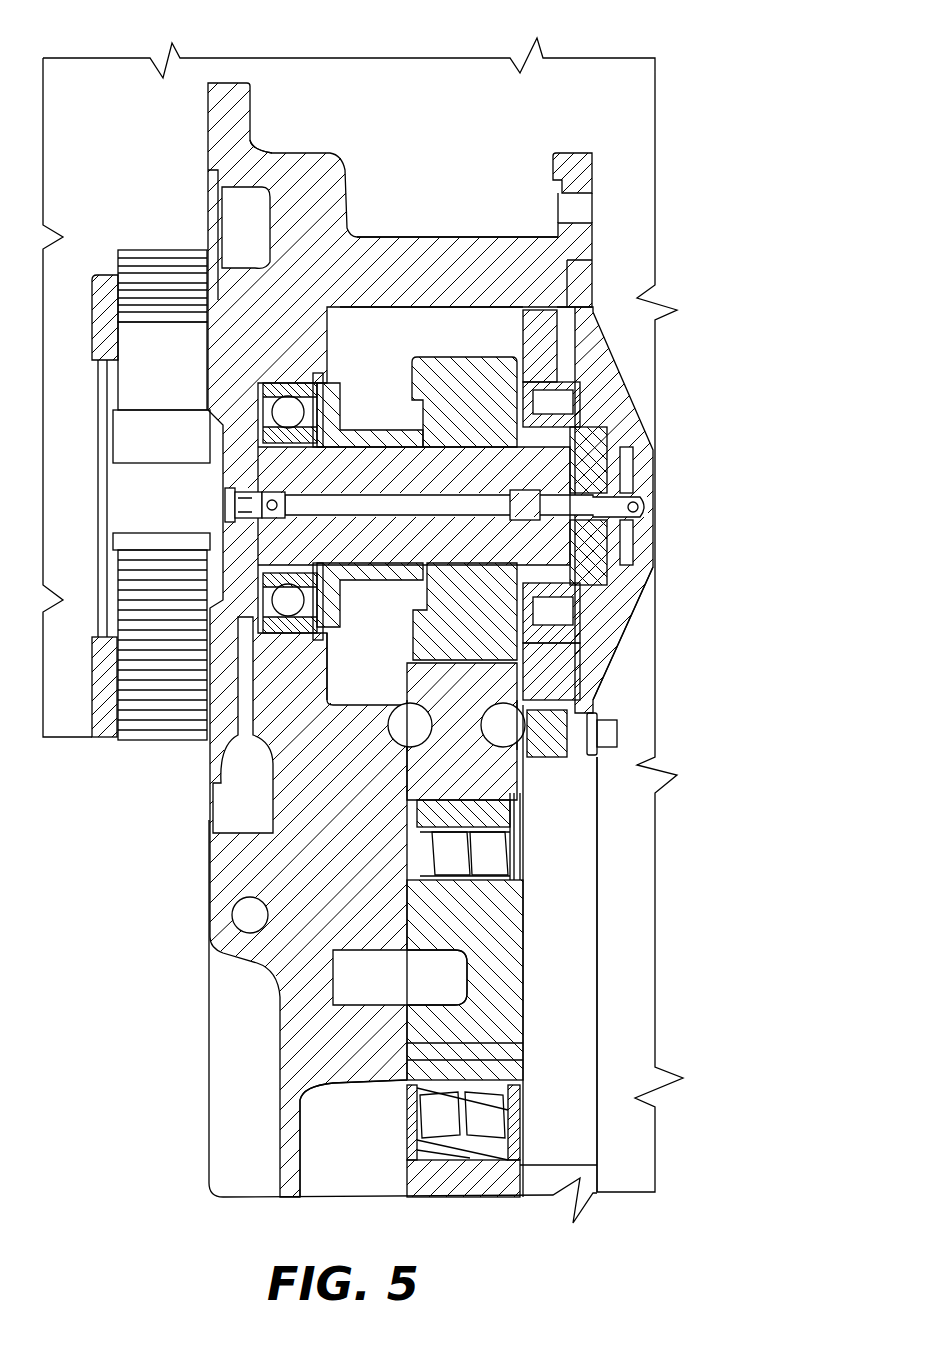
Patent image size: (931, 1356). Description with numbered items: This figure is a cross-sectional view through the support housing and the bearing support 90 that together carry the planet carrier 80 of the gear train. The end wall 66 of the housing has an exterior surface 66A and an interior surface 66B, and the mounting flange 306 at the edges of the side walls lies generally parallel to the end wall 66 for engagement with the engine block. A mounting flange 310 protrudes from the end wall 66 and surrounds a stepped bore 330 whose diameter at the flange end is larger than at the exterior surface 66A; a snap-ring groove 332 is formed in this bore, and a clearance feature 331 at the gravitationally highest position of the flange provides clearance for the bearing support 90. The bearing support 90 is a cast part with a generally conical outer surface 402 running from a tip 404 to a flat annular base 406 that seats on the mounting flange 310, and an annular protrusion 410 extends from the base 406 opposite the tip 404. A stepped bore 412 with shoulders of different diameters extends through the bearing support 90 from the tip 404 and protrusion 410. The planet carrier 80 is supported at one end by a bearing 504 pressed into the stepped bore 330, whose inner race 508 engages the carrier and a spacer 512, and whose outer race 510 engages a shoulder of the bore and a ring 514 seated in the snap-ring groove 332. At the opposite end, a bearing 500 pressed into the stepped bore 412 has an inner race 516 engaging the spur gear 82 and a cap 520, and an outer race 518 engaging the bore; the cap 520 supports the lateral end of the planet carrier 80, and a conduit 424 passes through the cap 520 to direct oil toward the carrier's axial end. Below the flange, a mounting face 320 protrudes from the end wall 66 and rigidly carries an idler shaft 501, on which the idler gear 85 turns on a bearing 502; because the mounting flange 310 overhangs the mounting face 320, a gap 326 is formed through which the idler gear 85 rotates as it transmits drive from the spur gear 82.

The end wall 66 is at (232, 85).
The exterior surface 66A is at (207, 110).
The interior surface 66B is at (250, 97).
The mounting flange 306 is at (587, 153).
The mounting flange 310 is at (457, 281).
The clearance feature 331 is at (580, 262).
The annular protrusion 410 is at (580, 313).
The stepped bore 412 is at (580, 373).
The cap 520 is at (580, 420).
The tip 404 is at (657, 468).
The conduit 424 is at (653, 517).
The conical outer surface 402 is at (653, 583).
The inner race 516 is at (580, 598).
The bearing 500 is at (580, 640).
The outer race 518 is at (570, 700).
The bearing support 90 is at (597, 700).
The annular base 406 is at (580, 753).
The gap 326 is at (523, 783).
The snap-ring groove 332 is at (260, 362).
The ring 514 is at (151, 636).
The spacer 512 is at (398, 428).
The stepped bore 330 is at (320, 395).
The planet carrier 80 is at (289, 477).
The inner race 508 is at (322, 582).
The bearing 504 is at (318, 608).
The outer race 510 is at (322, 640).
The spur gear 82 is at (481, 644).
The idler gear 85 is at (481, 784).
The mounting face 320 is at (366, 899).
The idler shaft 501 is at (489, 912).
The bearing 502 is at (503, 1145).